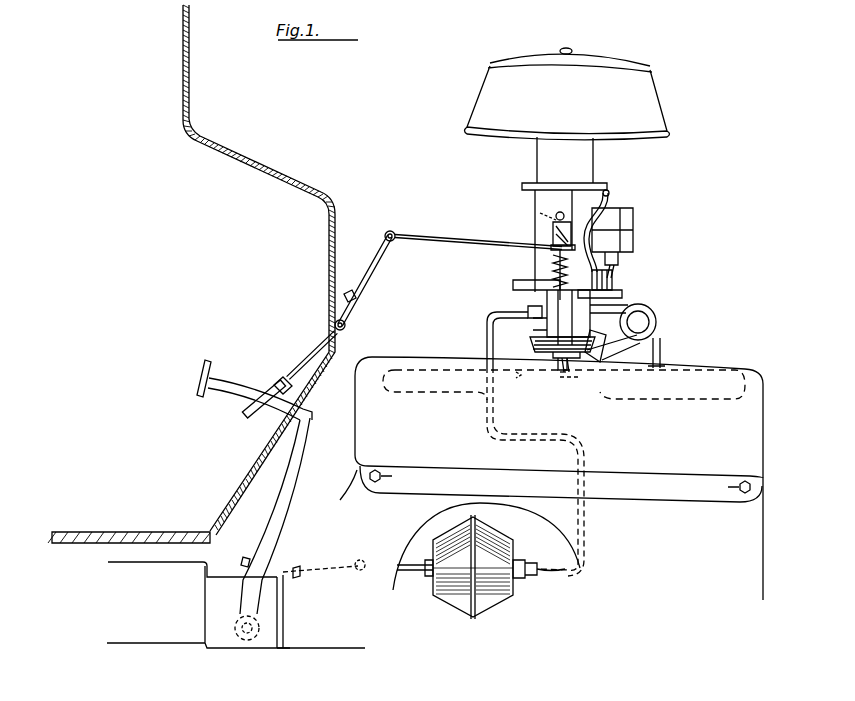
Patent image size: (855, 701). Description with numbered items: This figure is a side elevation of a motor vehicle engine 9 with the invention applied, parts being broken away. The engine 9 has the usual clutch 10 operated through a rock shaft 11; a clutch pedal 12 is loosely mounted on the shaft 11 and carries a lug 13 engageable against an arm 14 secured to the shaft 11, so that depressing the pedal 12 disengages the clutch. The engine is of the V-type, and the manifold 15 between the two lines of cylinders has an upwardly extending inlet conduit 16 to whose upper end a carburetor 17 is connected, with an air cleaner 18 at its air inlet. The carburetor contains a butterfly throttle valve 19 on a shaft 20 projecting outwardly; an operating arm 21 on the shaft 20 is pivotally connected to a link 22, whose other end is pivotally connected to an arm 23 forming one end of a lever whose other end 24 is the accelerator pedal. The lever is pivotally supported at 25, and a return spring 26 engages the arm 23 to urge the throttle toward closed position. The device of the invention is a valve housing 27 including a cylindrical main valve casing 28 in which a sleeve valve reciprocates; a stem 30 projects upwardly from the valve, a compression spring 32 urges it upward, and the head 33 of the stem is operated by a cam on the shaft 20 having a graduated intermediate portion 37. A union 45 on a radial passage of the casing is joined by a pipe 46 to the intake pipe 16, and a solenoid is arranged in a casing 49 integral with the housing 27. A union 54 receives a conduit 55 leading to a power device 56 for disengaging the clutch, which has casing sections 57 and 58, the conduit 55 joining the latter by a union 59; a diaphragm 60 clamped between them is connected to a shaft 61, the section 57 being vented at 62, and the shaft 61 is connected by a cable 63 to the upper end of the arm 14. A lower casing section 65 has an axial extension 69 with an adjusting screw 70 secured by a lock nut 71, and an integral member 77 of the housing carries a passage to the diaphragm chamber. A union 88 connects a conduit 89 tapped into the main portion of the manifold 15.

The engine 9 is at (745, 366).
The clutch 10 is at (268, 642).
The rock shaft 11 is at (243, 645).
The clutch pedal 12 is at (290, 472).
The lug 13 is at (244, 560).
The arm 14 is at (294, 566).
The manifold 15 is at (712, 378).
The inlet conduit 16 is at (600, 333).
The carburetor 17 is at (535, 197).
The air cleaner 18 is at (653, 94).
The butterfly throttle valve 19 is at (538, 213).
The shaft 20 is at (572, 205).
The operating arm 21 is at (604, 272).
The link 22 is at (478, 245).
The arm 23 is at (372, 266).
The accelerator pedal 24 is at (305, 360).
The pivot 25 is at (346, 325).
The return spring 26 is at (358, 298).
The valve housing 27 is at (558, 302).
The main valve casing 28 is at (530, 318).
The stem 30 is at (552, 248).
The compression spring 32 is at (556, 272).
The head 33 is at (553, 233).
The graduated intermediate portion 37 is at (633, 232).
The union 45 is at (622, 295).
The pipe 46 is at (652, 312).
The casing 49 is at (613, 282).
The union 54 is at (528, 310).
The conduit 55 is at (487, 318).
The power device 56 is at (478, 612).
The casing section 57 is at (452, 605).
The casing section 58 is at (505, 600).
The union 59 is at (535, 586).
The diaphragm 60 is at (487, 530).
The shaft 61 is at (415, 576).
The vent 62 is at (433, 550).
The cable 63 is at (327, 578).
The lower casing section 65 is at (571, 374).
The axial extension 69 is at (568, 380).
The adjusting screw 70 is at (560, 373).
The lock nut 71 is at (520, 376).
The member 77 is at (535, 325).
The union 88 is at (615, 350).
The conduit 89 is at (660, 345).